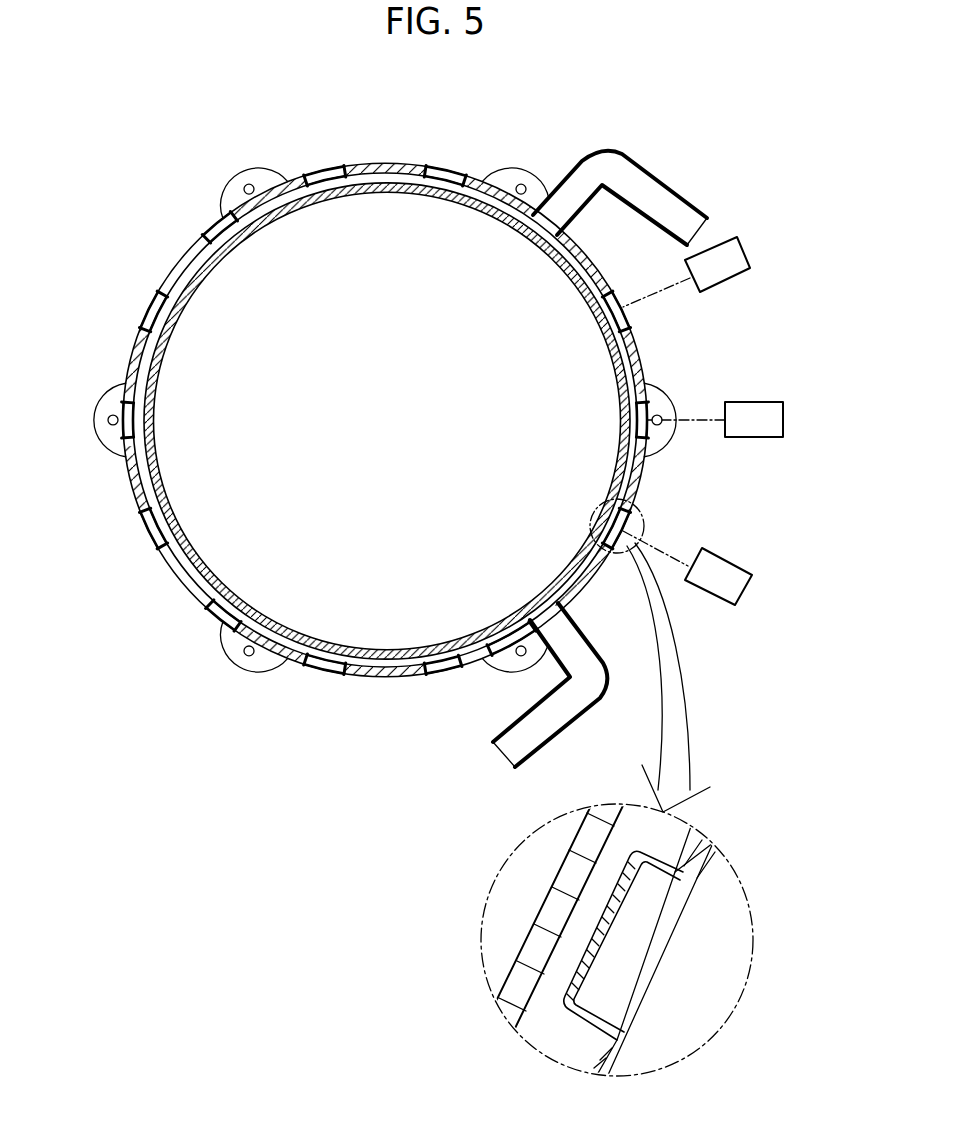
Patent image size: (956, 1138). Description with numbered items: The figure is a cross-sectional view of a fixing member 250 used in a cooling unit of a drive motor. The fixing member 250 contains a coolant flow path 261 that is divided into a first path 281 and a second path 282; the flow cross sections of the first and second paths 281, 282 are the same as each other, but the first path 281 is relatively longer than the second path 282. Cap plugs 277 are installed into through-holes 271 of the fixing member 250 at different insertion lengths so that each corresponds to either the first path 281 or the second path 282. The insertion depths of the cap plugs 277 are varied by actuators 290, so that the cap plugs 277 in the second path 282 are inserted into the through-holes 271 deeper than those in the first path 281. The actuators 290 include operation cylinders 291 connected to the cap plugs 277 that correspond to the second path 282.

The fixing member 250 is at (400, 106).
The coolant flow path 261 is at (419, 435).
The through-holes 271 is at (163, 285).
The cap plugs 277 is at (143, 323).
The first path 281 is at (405, 657).
The second path 282 is at (625, 372).
The actuators 290 is at (745, 244).
The operation cylinders 291 is at (727, 283).